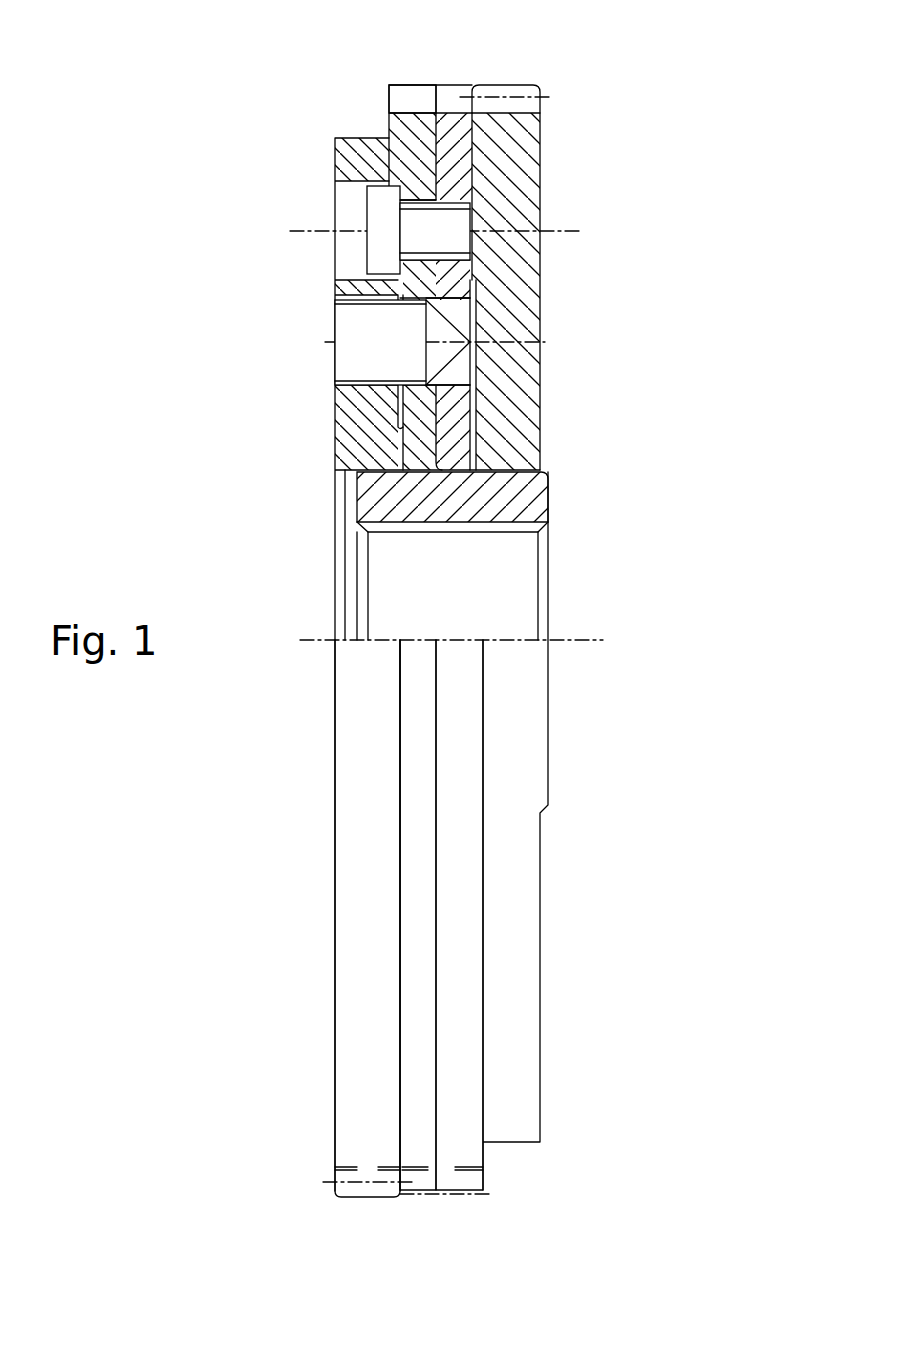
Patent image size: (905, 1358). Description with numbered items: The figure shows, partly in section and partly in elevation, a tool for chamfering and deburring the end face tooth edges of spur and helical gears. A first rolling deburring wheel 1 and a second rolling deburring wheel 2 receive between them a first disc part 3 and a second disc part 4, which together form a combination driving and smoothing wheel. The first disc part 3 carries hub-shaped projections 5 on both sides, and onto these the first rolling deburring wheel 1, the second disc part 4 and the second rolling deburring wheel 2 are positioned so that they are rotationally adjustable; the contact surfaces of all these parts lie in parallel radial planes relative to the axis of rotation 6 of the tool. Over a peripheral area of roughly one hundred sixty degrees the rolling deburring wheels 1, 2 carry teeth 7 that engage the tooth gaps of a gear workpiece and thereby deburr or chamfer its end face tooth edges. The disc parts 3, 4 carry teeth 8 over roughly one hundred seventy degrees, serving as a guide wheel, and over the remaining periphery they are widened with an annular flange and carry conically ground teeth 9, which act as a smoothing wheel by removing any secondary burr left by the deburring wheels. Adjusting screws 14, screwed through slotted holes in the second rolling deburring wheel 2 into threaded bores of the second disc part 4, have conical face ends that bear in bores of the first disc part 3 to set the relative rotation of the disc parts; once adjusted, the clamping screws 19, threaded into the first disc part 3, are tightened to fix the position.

The first rolling deburring wheel 1 is at (507, 940).
The second rolling deburring wheel 2 is at (367, 940).
The first disc part 3 is at (460, 1020).
The second disc part 4 is at (418, 1005).
The hub-shaped projections 5 is at (520, 490).
The axis of rotation 6 is at (603, 642).
The teeth 7 is at (528, 90).
The teeth 8 is at (450, 97).
The conically ground teeth 9 is at (400, 98).
The adjusting screws 14 is at (345, 360).
The clamping screws 19 is at (380, 250).